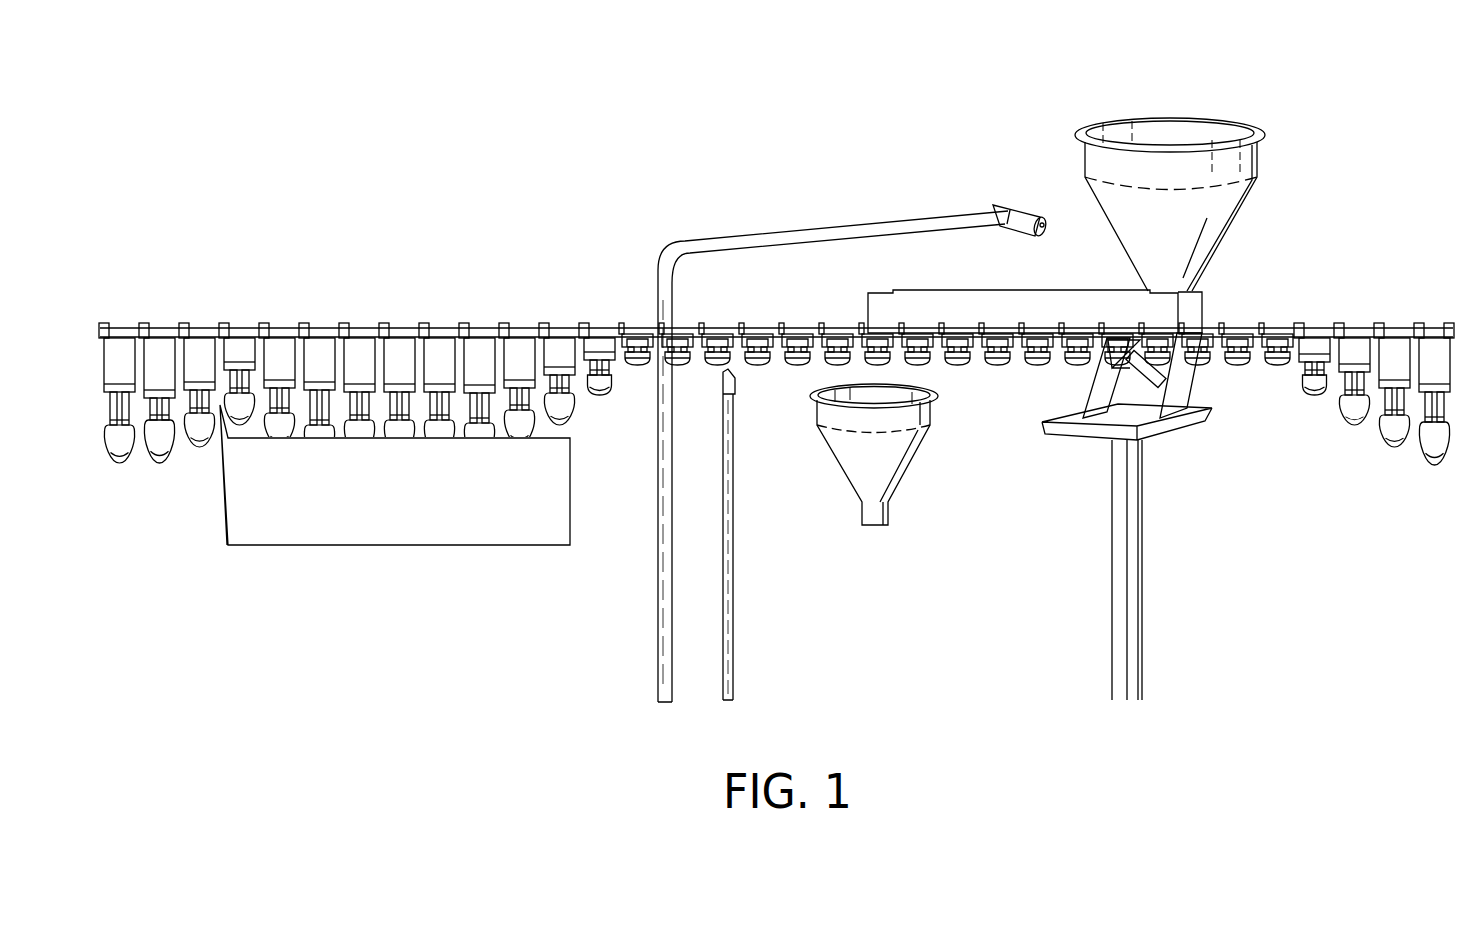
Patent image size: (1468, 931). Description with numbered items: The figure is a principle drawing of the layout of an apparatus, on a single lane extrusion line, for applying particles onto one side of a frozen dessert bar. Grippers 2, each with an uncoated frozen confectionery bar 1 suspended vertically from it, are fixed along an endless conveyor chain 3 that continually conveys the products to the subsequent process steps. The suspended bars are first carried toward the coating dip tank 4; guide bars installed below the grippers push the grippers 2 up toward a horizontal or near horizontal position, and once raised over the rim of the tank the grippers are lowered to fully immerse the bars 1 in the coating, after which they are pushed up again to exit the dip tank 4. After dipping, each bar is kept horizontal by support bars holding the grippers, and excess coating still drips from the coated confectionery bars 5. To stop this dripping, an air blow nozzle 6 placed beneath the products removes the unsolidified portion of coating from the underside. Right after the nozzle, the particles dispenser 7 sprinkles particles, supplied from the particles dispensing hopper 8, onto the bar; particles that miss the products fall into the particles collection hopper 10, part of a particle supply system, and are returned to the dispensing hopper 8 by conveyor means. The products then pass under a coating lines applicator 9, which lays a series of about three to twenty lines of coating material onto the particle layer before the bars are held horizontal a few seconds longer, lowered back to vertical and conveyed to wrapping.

The uncoated frozen confectionery bar 1 is at (122, 463).
The gripper 2 is at (163, 398).
The endless conveyor chain 3 is at (272, 330).
The coating dip tank 4 is at (387, 548).
The coated confectionery bar 5 is at (570, 412).
The air blow nozzle 6 is at (734, 381).
The particles dispenser 7 is at (1198, 312).
The particles dispensing hopper 8 is at (1257, 176).
The coating lines applicator 9 is at (989, 210).
The particles collection hopper 10 is at (905, 482).